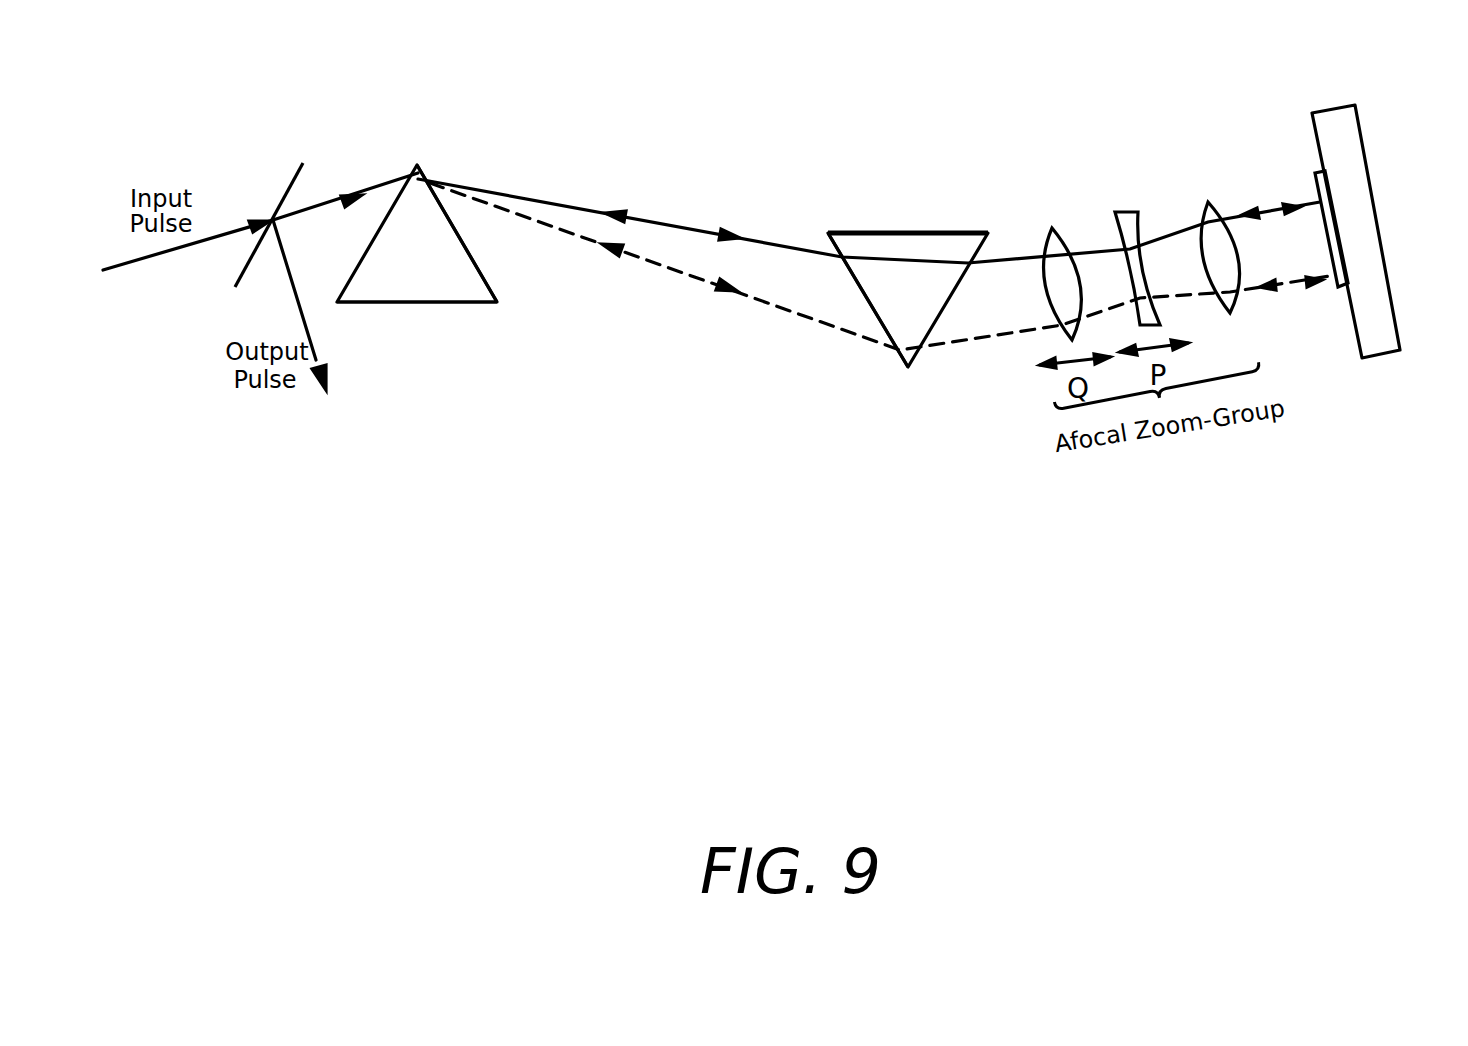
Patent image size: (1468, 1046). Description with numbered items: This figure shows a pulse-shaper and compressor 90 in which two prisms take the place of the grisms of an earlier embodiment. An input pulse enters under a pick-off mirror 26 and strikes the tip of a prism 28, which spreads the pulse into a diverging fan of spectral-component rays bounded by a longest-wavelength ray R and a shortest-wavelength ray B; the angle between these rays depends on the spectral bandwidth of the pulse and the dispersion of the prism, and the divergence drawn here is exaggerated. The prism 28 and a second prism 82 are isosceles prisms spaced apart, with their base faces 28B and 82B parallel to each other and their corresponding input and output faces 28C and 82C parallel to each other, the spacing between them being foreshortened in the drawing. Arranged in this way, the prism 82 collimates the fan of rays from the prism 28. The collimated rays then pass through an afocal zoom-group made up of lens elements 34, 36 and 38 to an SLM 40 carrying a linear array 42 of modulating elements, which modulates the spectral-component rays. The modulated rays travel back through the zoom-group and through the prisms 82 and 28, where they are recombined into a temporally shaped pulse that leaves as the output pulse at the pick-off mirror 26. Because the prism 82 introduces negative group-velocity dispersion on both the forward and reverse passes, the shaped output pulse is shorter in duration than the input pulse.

The pick-off mirror 26 is at (240, 270).
The prism 28 is at (476, 320).
The base face 28B is at (402, 303).
The input and output face 28C is at (482, 265).
The shortest-wavelength ray B is at (560, 231).
The longest-wavelength ray R is at (672, 228).
The prism 82 is at (901, 200).
The base face 82B is at (863, 232).
The input and output face 82C is at (833, 250).
The lens element 38 is at (1053, 230).
The lens element 36 is at (1128, 212).
The lens element 34 is at (1210, 200).
The SLM 40 is at (1382, 129).
The linear array of modulating elements 42 is at (1337, 287).
The pulse-shaper and compressor 90 is at (393, 692).